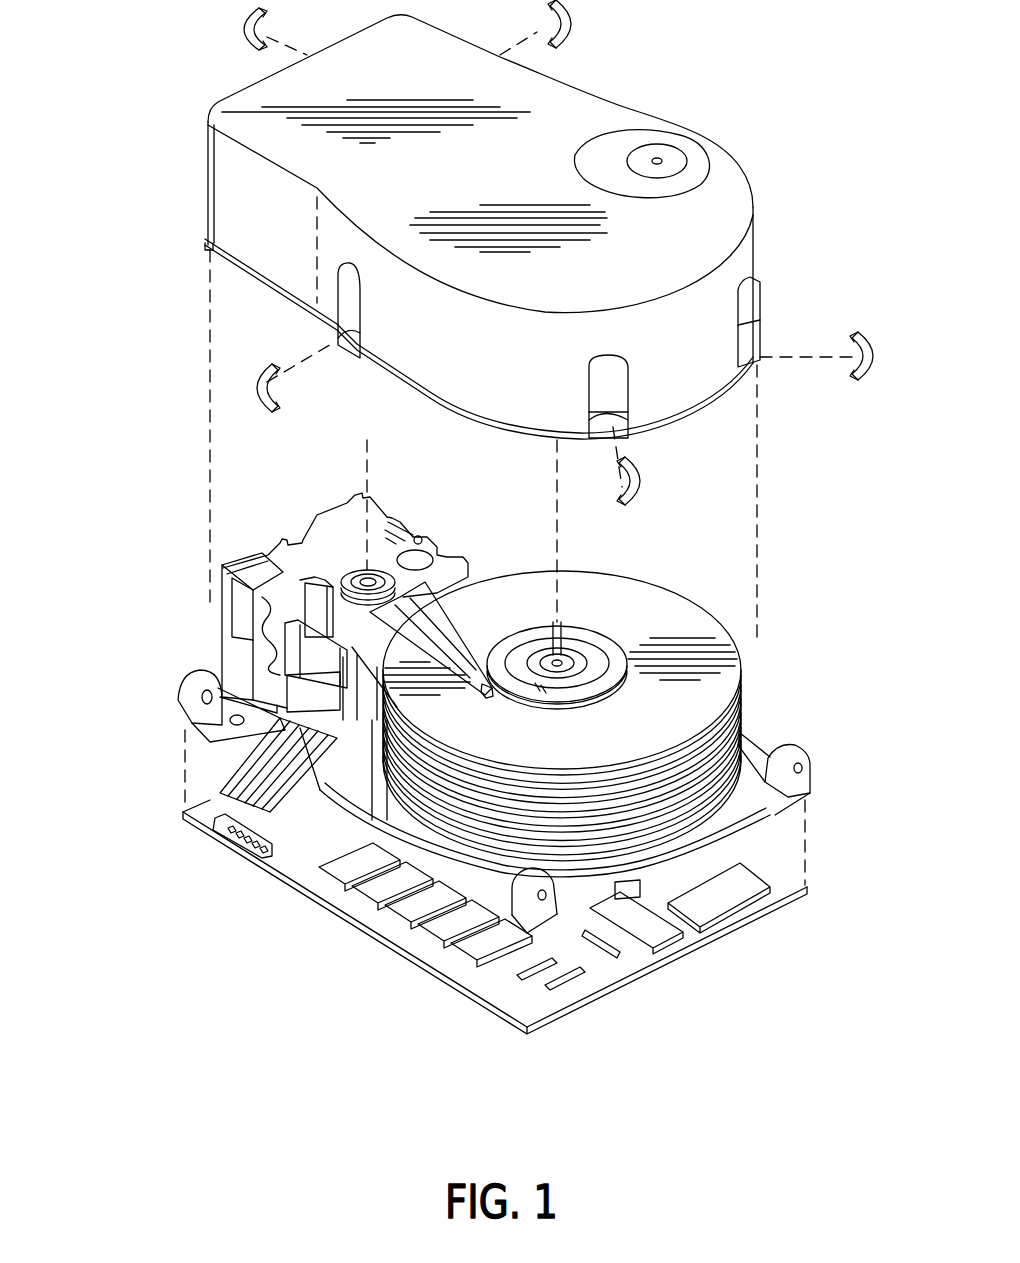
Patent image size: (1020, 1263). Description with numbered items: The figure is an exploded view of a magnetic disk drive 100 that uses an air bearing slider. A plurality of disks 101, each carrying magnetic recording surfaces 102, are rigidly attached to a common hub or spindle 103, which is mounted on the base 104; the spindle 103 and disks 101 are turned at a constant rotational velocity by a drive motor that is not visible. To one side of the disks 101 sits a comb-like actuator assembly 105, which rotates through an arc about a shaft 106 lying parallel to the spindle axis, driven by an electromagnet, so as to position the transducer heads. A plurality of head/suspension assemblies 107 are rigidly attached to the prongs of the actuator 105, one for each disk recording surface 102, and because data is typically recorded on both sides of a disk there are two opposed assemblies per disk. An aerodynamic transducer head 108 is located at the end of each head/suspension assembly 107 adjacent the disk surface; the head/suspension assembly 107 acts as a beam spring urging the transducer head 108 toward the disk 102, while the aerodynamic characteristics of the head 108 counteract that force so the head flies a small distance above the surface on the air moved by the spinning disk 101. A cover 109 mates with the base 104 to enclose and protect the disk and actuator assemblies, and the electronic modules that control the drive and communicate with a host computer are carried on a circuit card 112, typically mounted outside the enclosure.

The magnetic disk drive 100 is at (160, 443).
The disks 101 is at (742, 797).
The magnetic recording surfaces 102 is at (652, 608).
The spindle 103 is at (565, 655).
The base 104 is at (817, 782).
The actuator assembly 105 is at (317, 598).
The shaft 106 is at (362, 572).
The head/suspension assembly 107 is at (482, 665).
The transducer head 108 is at (488, 698).
The cover 109 is at (745, 168).
The circuit card 112 is at (748, 918).